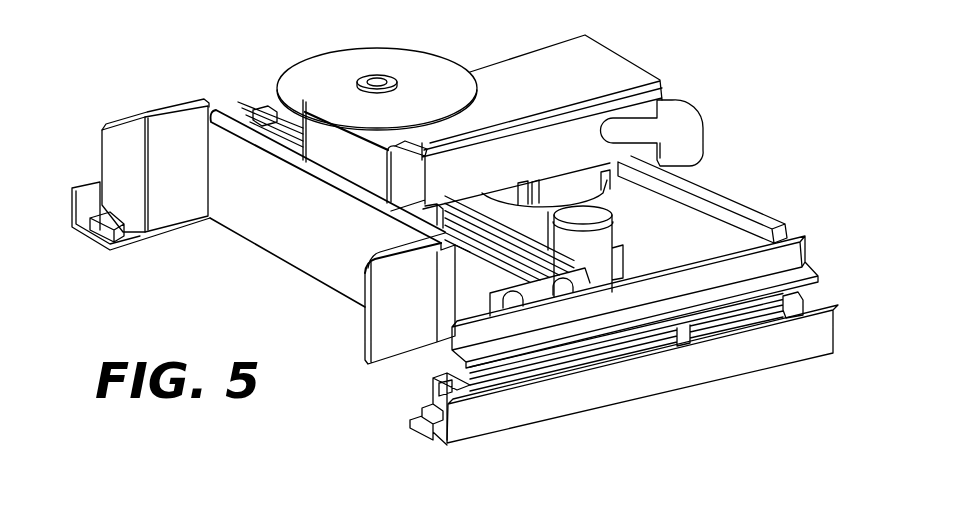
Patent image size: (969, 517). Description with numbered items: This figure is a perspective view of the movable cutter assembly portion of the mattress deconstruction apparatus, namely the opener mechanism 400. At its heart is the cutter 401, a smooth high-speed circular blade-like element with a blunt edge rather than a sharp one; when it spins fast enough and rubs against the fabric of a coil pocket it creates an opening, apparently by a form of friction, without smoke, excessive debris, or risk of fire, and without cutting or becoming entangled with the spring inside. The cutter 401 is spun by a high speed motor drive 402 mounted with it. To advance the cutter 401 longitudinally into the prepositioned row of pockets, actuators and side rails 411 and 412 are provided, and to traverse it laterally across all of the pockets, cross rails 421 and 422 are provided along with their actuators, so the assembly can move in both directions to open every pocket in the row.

The opener mechanism 400 is at (447, 258).
The cutter 401 is at (324, 82).
The high speed motor drive 402 is at (580, 71).
The side rail 411 is at (513, 407).
The side rail 412 is at (87, 200).
The cross rail 421 is at (793, 235).
The cross rail 422 is at (448, 313).